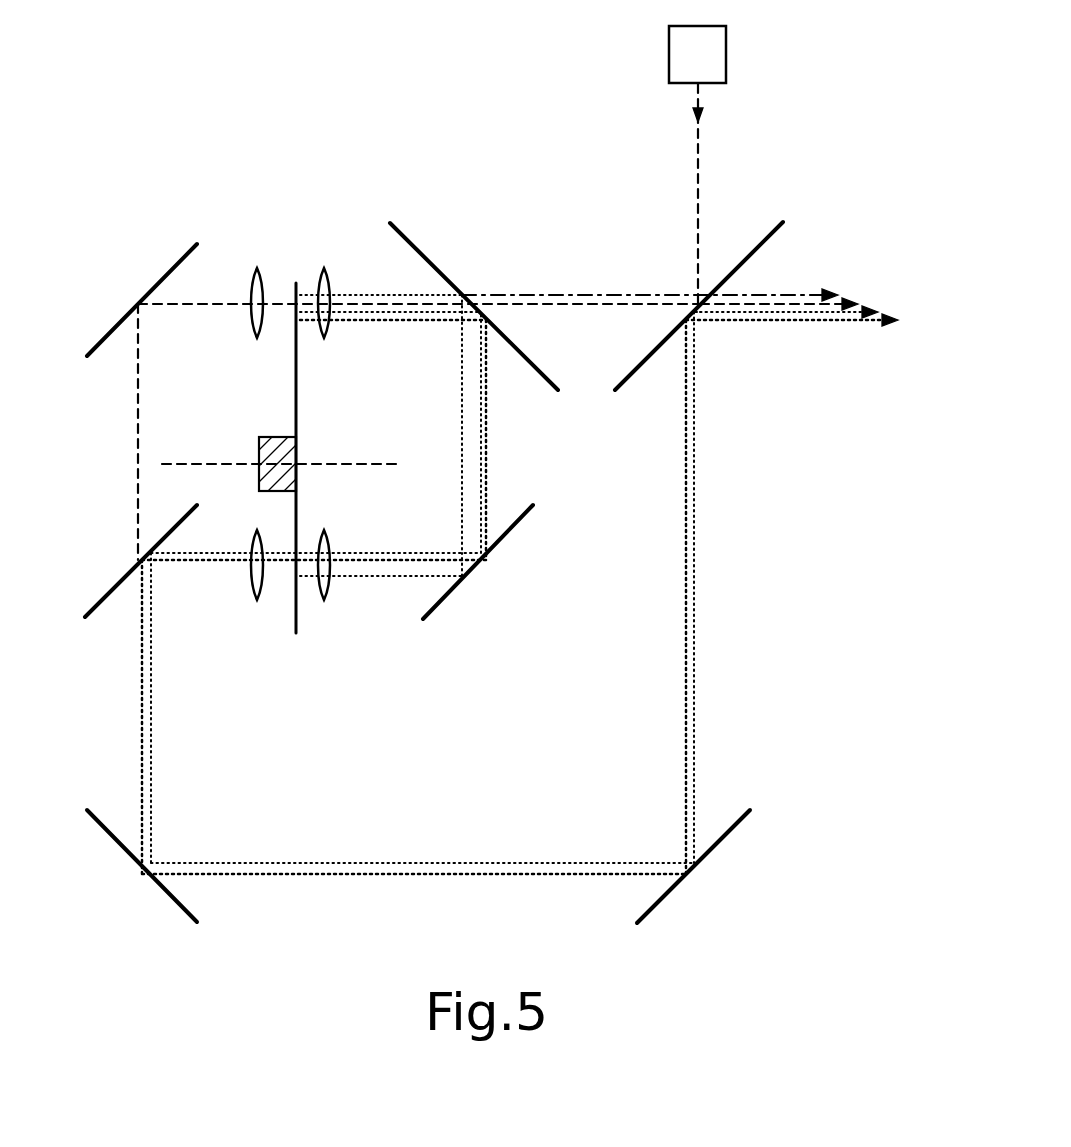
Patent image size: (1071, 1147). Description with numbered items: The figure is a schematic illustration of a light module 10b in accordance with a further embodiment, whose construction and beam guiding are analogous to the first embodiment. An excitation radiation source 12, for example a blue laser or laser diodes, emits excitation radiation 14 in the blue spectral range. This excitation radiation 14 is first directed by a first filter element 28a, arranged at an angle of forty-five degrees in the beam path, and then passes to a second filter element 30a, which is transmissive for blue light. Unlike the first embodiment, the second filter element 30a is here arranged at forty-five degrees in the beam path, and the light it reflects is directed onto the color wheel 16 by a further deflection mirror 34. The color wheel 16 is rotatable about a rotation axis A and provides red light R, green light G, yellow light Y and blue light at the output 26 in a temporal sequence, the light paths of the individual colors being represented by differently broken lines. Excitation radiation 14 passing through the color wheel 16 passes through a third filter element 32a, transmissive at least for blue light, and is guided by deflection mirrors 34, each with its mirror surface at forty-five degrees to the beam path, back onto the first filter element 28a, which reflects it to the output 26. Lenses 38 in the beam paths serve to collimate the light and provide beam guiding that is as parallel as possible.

The light module 10b is at (188, 196).
The excitation radiation source 12 is at (718, 64).
The excitation radiation 14 is at (700, 193).
The color wheel 16 is at (294, 396).
The output 26 is at (870, 282).
The first filter element 28a is at (755, 245).
The second filter element 30a is at (445, 265).
The third filter element 32a is at (120, 580).
The deflection mirror 34 is at (158, 284).
The lens 38 is at (260, 288).
The rotation axis A is at (413, 465).
The red light R is at (634, 296).
The green light G is at (405, 318).
The yellow light Y is at (353, 297).